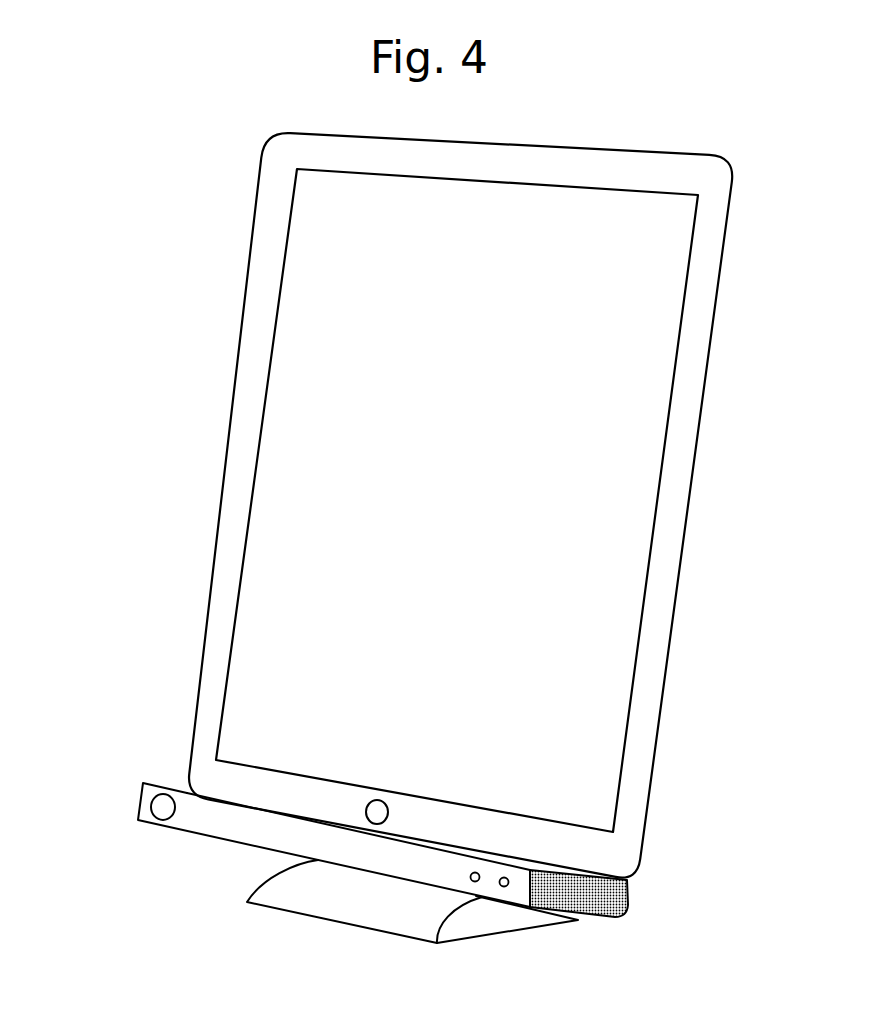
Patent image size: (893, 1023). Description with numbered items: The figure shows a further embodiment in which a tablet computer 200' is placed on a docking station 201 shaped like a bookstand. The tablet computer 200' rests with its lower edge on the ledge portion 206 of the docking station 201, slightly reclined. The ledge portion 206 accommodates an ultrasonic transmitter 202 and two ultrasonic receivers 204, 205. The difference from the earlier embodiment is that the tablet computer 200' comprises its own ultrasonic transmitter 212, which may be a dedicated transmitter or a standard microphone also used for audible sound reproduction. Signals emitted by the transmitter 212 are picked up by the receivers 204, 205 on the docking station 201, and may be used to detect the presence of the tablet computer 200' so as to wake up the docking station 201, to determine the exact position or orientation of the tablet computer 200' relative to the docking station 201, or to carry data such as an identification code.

The tablet computer 200' is at (460, 505).
The docking station 201 is at (190, 872).
The ultrasonic transmitter 202 is at (157, 802).
The ultrasonic receiver 204 is at (471, 881).
The ultrasonic receiver 205 is at (503, 887).
The ledge portion 206 is at (595, 917).
The ultrasonic transmitter 212 is at (376, 801).